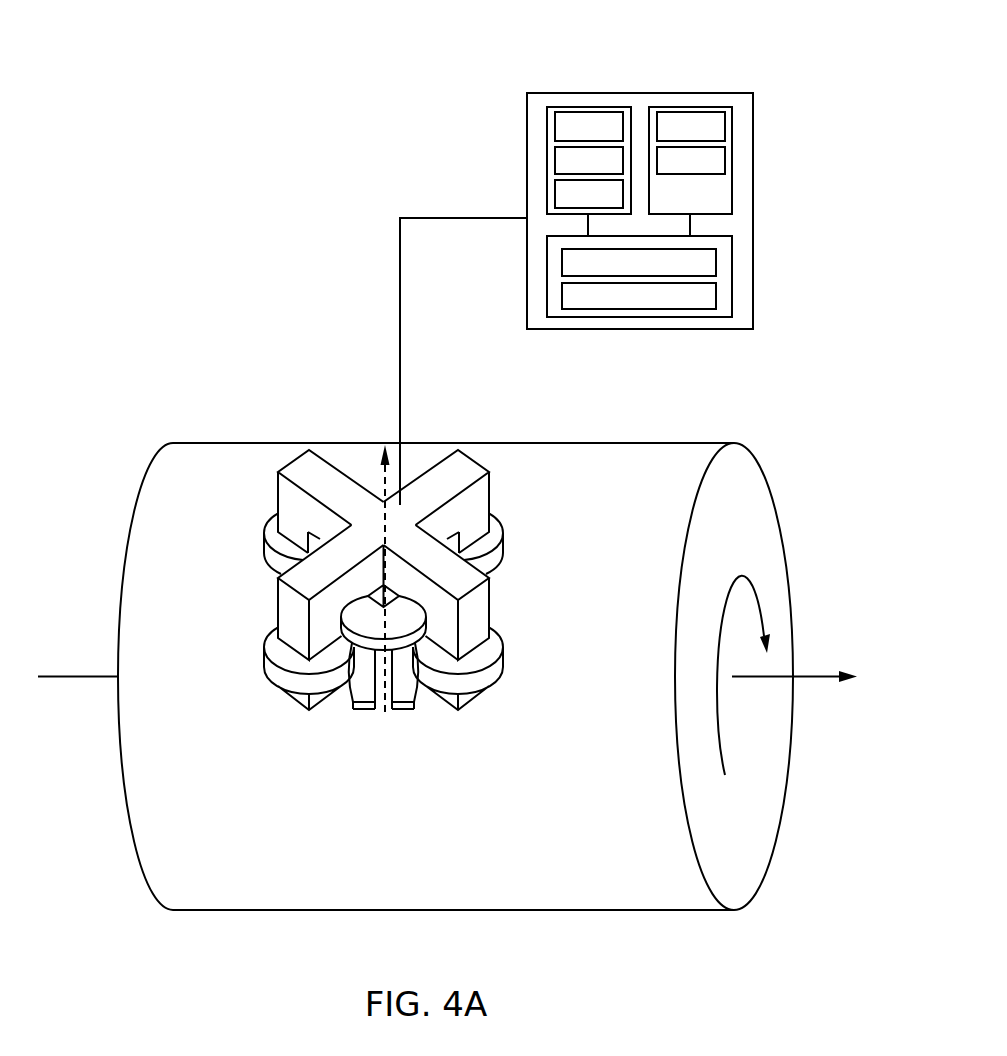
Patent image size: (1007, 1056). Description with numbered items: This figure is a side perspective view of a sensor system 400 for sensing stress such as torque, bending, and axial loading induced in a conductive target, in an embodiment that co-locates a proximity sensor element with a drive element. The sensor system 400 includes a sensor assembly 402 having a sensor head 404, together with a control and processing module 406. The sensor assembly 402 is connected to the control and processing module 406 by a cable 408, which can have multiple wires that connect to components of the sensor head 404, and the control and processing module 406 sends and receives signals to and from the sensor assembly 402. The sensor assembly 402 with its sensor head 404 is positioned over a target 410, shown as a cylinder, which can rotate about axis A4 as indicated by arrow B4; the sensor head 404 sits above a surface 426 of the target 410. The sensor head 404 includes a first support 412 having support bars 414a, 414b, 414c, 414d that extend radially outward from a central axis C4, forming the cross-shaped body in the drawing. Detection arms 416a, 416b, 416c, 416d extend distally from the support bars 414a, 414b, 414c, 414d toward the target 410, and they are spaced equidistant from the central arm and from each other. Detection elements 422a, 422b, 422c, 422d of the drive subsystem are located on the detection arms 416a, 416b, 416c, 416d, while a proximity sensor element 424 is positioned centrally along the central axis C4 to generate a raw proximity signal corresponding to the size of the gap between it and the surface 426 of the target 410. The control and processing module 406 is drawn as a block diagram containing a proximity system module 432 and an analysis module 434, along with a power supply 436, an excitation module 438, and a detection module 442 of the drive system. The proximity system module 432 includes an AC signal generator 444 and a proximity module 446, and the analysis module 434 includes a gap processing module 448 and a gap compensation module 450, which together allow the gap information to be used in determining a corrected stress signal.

The sensor system 400 is at (246, 125).
The sensor assembly 402 is at (203, 434).
The sensor head 404 is at (506, 479).
The control and processing module 406 is at (710, 329).
The cable 408 is at (399, 328).
The target 410 is at (763, 445).
The first support 412 is at (367, 488).
The support bar 414a is at (465, 468).
The support bar 414b is at (477, 578).
The support bar 414c is at (302, 576).
The support bar 414d is at (302, 470).
The detection arm 416a is at (488, 505).
The detection arm 416b is at (486, 625).
The detection arm 416c is at (288, 610).
The detection arm 416d is at (288, 505).
The detection element 422a is at (503, 545).
The detection element 422b is at (501, 655).
The detection element 422c is at (265, 655).
The detection element 422d is at (265, 545).
The proximity sensor element 424 is at (400, 696).
The surface 426 is at (640, 441).
The proximity system module 432 is at (690, 106).
The analysis module 434 is at (638, 317).
The power supply 436 is at (554, 127).
The excitation module 438 is at (554, 163).
The detection module 442 is at (554, 197).
The AC signal generator 444 is at (726, 123).
The proximity module 446 is at (726, 160).
The gap processing module 448 is at (716, 258).
The gap compensation module 450 is at (716, 293).
The axis A4 is at (810, 675).
The arrow B4 is at (757, 590).
The central axis C4 is at (368, 470).